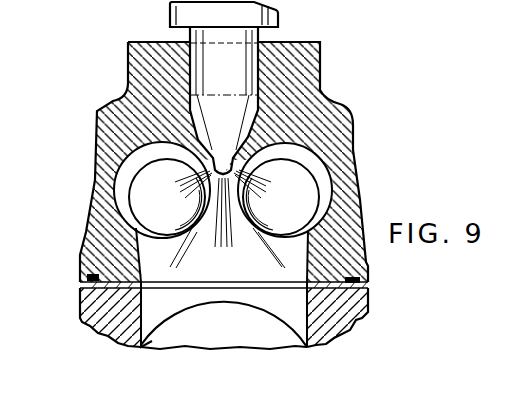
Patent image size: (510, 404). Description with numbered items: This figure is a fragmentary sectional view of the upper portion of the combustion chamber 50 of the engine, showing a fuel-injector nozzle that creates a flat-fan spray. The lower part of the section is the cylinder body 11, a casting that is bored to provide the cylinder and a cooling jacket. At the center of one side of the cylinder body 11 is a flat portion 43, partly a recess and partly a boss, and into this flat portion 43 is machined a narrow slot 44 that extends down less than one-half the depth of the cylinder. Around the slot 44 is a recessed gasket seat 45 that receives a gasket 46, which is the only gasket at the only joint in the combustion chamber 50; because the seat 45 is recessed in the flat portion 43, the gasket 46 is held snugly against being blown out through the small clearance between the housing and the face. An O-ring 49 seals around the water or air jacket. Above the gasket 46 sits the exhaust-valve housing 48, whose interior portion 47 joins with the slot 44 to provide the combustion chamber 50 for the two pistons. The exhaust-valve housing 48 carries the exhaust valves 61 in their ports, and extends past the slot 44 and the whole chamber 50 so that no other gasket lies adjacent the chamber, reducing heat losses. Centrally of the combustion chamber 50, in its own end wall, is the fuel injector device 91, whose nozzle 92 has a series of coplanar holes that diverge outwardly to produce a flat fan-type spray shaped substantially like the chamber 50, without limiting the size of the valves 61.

The cylinder body 11 is at (234, 315).
The flat portion 43 is at (88, 298).
The narrow slot 44 is at (250, 299).
The gasket seat 45 is at (144, 326).
The gasket 46 is at (142, 294).
The interior portion 47 is at (233, 272).
The exhaust-valve housing 48 is at (349, 101).
The O-ring 49 is at (87, 276).
The combustion chamber 50 is at (295, 280).
The exhaust valve 61 is at (172, 208).
The fuel injector device 91 is at (219, 55).
The nozzle 92 is at (222, 160).